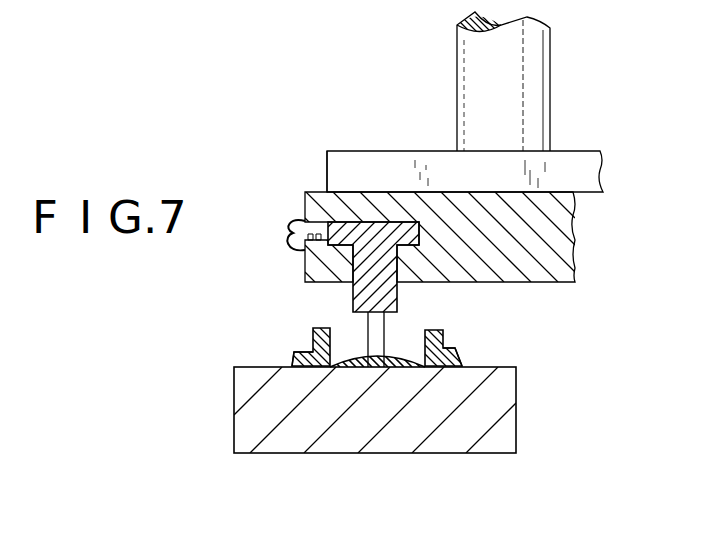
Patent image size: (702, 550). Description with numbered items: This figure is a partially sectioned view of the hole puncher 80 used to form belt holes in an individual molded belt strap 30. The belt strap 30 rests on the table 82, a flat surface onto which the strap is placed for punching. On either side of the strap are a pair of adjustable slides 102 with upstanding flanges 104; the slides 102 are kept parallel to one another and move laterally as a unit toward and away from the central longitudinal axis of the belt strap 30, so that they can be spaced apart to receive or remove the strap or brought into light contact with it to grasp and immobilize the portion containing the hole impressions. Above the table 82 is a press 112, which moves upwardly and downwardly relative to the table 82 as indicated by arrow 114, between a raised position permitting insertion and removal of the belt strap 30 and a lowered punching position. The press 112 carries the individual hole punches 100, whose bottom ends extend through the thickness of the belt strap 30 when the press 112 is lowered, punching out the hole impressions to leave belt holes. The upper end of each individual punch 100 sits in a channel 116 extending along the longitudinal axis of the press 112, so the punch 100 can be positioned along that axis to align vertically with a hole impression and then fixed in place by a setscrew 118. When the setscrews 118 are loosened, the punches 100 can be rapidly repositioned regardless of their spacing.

The belt strap 30 is at (345, 367).
The hole puncher 80 is at (348, 140).
The table 82 is at (493, 403).
The individual hole punch 100 is at (390, 300).
The adjustable slide 102 is at (292, 352).
The upstanding flange 104 is at (323, 327).
The press 112 is at (322, 168).
The arrow 114 is at (435, 114).
The channel 116 is at (353, 246).
The setscrew 118 is at (297, 217).